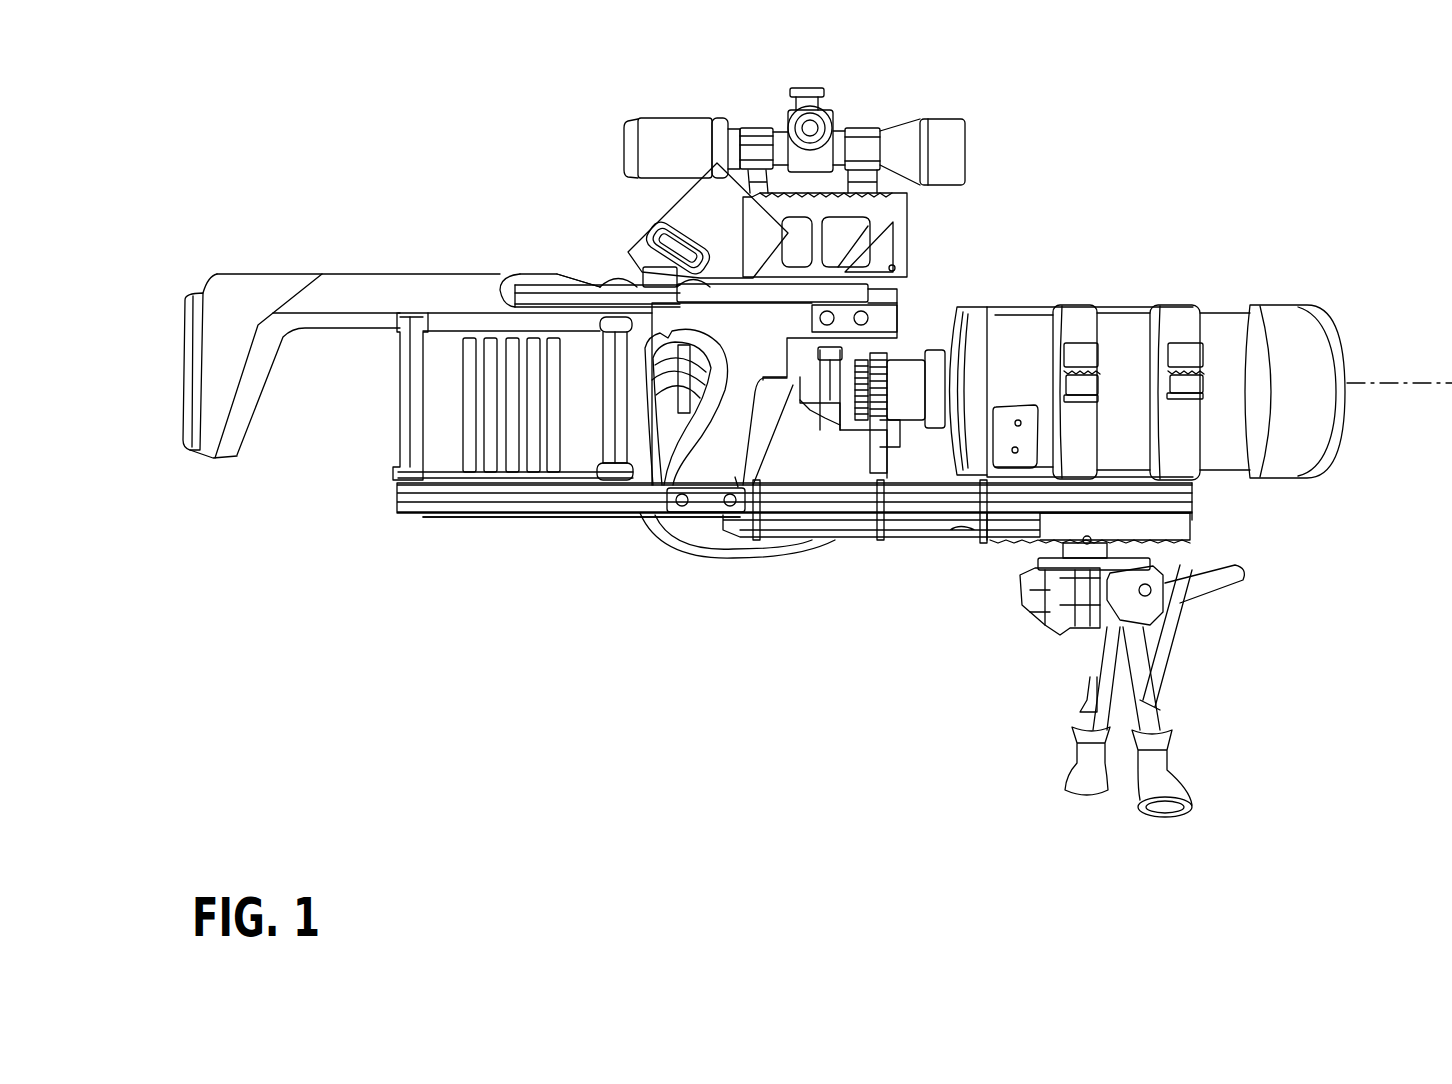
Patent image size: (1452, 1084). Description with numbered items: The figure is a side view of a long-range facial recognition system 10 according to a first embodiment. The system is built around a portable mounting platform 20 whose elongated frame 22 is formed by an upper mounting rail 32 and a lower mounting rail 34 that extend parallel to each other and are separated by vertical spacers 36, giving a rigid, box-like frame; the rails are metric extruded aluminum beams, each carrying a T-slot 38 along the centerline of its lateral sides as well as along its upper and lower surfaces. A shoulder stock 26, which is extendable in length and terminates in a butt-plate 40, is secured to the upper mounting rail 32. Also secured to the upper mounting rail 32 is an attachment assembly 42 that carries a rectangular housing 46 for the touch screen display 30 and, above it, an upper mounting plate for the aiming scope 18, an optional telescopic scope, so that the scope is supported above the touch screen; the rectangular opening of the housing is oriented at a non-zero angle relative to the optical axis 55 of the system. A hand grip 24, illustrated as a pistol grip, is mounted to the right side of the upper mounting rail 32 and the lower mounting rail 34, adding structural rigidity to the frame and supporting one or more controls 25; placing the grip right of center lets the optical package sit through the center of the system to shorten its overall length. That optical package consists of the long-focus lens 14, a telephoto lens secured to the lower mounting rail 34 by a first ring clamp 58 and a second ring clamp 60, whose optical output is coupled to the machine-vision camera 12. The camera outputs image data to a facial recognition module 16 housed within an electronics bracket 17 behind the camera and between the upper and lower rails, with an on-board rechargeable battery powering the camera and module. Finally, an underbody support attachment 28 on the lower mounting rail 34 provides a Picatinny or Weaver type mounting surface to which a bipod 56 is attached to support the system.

The facial recognition system 10 is at (1063, 160).
The machine-vision camera 12 is at (833, 427).
The long-focus lens 14 is at (1148, 347).
The facial recognition module 16 is at (522, 465).
The electronics bracket 17 is at (464, 403).
The aiming scope 18 is at (693, 118).
The portable mounting platform 20 is at (423, 525).
The elongated frame 22 is at (642, 490).
The hand grip 24 is at (717, 465).
The controls 25 is at (834, 318).
The shoulder stock 26 is at (360, 339).
The underbody support attachment 28 is at (1140, 548).
The touch screen display 30 is at (660, 213).
The upper mounting rail 32 is at (582, 283).
The lower mounting rail 34 is at (495, 517).
The vertical spacers 36 is at (400, 415).
The T-slot 38 is at (537, 290).
The butt-plate 40 is at (183, 412).
The attachment assembly 42 is at (915, 240).
The rectangular housing 46 is at (734, 222).
The optical axis 55 is at (1397, 385).
The bipod 56 is at (1160, 698).
The first ring clamp 58 is at (1058, 310).
The second ring clamp 60 is at (1172, 310).